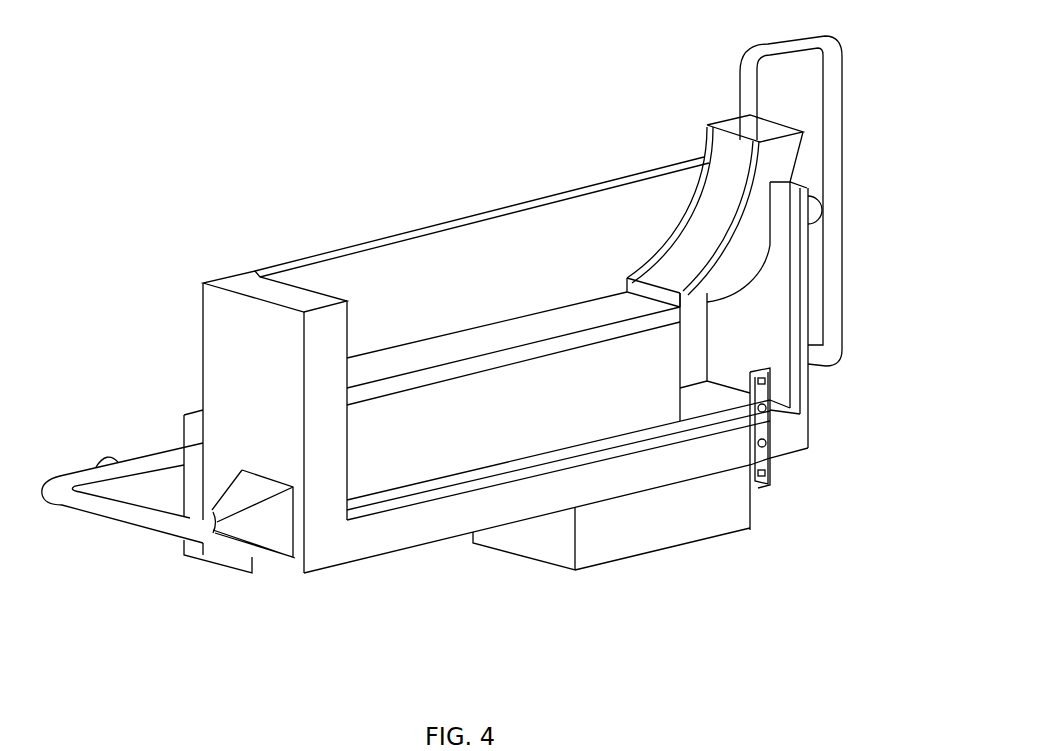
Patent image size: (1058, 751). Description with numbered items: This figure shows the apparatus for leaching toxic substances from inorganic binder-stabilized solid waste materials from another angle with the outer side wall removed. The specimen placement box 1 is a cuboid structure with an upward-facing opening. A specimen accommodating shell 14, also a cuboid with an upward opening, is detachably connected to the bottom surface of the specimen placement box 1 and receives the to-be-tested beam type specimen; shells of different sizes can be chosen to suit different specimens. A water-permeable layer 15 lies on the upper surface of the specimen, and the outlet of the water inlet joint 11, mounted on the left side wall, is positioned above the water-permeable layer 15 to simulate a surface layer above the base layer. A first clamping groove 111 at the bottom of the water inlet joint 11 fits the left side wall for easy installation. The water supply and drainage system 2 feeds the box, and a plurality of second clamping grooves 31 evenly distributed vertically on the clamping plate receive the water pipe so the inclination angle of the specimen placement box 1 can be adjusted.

The specimen placement box 1 is at (568, 245).
The water supply and drainage system 2 is at (260, 527).
The water inlet joint 11 is at (772, 130).
The specimen accommodating shell 14 is at (505, 422).
The water-permeable layer 15 is at (408, 362).
The second clamping groove 31 is at (768, 455).
The first clamping groove 111 is at (802, 197).